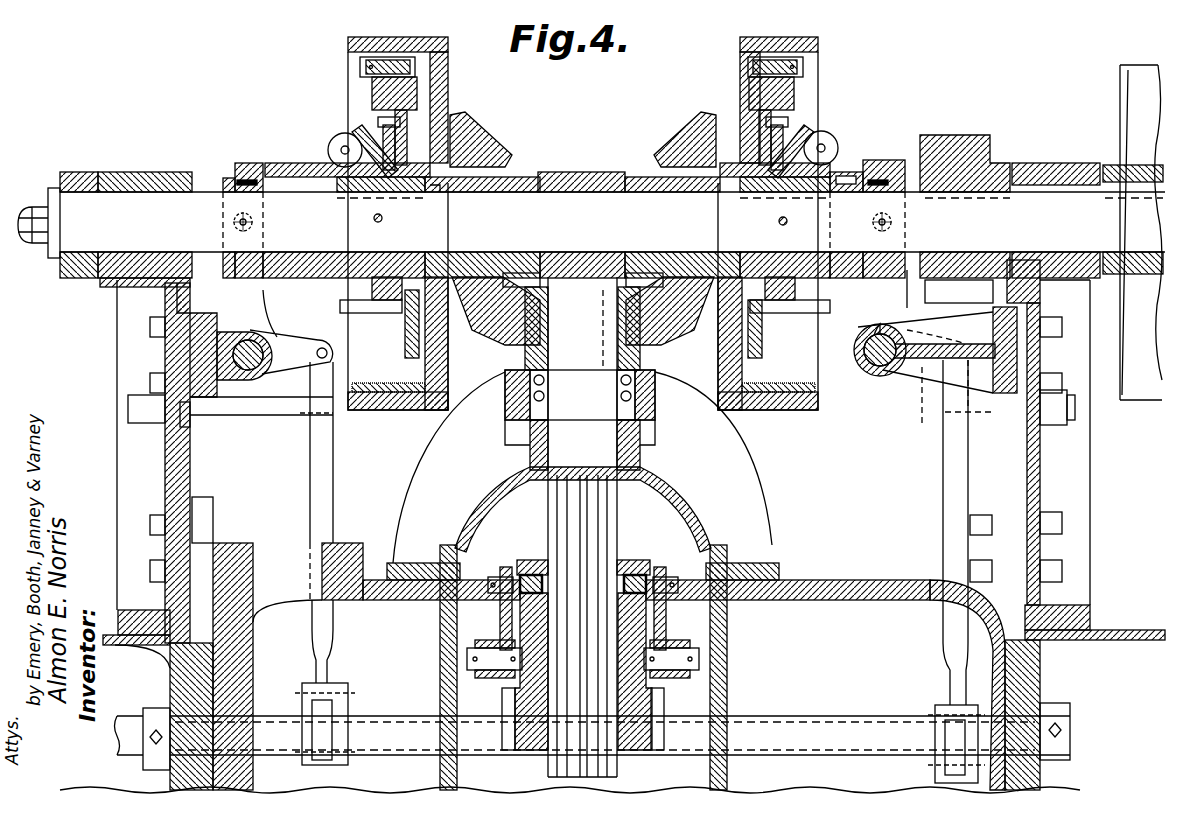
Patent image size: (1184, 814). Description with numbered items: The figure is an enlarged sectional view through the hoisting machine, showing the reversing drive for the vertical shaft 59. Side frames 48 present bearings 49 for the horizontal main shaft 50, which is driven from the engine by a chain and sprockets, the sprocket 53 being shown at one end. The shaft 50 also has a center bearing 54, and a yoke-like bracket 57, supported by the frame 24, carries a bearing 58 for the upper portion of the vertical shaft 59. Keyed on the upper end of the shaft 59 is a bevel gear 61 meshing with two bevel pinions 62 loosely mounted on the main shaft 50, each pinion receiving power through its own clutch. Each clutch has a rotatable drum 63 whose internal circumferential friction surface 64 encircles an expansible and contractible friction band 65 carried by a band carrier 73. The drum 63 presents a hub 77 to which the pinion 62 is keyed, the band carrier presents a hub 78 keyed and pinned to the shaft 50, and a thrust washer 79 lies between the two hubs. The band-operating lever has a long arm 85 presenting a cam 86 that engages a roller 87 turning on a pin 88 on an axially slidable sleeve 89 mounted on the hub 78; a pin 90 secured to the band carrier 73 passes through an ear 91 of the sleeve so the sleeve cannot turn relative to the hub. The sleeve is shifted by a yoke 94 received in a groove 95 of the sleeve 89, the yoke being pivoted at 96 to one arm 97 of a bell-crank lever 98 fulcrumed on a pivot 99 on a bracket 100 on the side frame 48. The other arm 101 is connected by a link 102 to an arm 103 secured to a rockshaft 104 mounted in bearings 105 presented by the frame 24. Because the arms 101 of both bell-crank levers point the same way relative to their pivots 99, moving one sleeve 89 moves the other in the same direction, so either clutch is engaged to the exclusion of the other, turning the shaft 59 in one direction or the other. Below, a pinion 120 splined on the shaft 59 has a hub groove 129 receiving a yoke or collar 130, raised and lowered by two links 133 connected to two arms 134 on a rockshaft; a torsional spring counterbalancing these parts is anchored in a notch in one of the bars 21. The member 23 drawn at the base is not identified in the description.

The bar 21 is at (170, 687).
The base flange 23 is at (1118, 632).
The frame 24 is at (840, 585).
The side frames 48 is at (191, 460).
The bearings 49 is at (118, 172).
The main shaft 50 is at (157, 212).
The sprocket 53 is at (1133, 395).
The center bearing 54 is at (592, 172).
The yoke-like bracket 57 is at (765, 470).
The bearing 58 is at (515, 415).
The vertical shaft 59 is at (600, 438).
The bevel gear 61 is at (497, 320).
The bevel pinions 62 is at (490, 140).
The rotatable drum 63 is at (394, 37).
The internal circumferential friction surface 64 is at (360, 65).
The friction band 65 is at (372, 392).
The band carrier 73 is at (417, 100).
The hub 77 is at (520, 177).
The hub 78 is at (336, 184).
The thrust washer 79 is at (437, 193).
The long arm 85 is at (770, 192).
The cam 86 is at (360, 130).
The roller 87 is at (338, 142).
The pin 88 is at (341, 150).
The sleeve 89 is at (270, 163).
The pin 90 is at (392, 300).
The ear 91 is at (355, 313).
The yoke 94 is at (243, 163).
The groove 95 is at (226, 178).
The pivot 96 is at (253, 222).
The arm 97 is at (230, 295).
The bell-crank lever 98 is at (255, 380).
The pivot 99 is at (247, 340).
The bracket 100 is at (220, 418).
The arm 101 is at (289, 345).
The link 102 is at (310, 500).
The arm 103 is at (346, 683).
The rockshaft 104 is at (385, 730).
The bearings 105 is at (205, 718).
The pinion 120 is at (663, 730).
The groove 129 is at (530, 560).
The collar 130 is at (520, 575).
The links 133 is at (500, 630).
The arms 134 is at (487, 678).